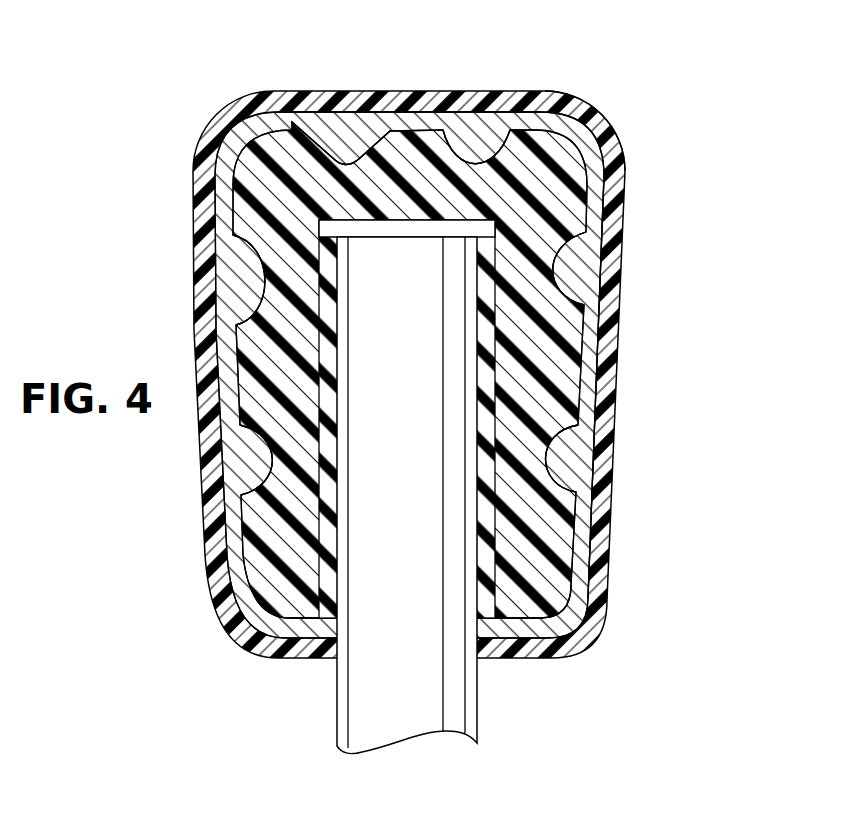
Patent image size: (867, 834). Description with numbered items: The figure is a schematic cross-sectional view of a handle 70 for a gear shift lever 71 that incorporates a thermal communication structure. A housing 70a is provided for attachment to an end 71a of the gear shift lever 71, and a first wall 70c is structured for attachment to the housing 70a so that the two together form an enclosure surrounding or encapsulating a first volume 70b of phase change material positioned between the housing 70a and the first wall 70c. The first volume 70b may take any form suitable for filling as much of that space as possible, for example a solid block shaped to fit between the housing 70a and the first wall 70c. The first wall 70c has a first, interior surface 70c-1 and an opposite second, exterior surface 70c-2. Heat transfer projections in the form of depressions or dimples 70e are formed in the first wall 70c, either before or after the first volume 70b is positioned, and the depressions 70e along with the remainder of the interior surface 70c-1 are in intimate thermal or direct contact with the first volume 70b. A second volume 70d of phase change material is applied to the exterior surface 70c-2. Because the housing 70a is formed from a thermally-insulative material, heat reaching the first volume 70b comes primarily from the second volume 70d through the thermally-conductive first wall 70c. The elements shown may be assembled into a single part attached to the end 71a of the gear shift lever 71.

The handle 70 is at (217, 115).
The housing 70a is at (488, 570).
The first volume of PCM 70b is at (540, 528).
The first wall 70c is at (593, 388).
The first (interior) surface 70c-1 is at (596, 120).
The second (exterior) surface 70c-2 is at (603, 218).
The second volume of PCM 70d is at (617, 187).
The depressions 70e is at (348, 133).
The gear shift lever 71 is at (440, 692).
The end of the gear shift lever 71a is at (392, 332).